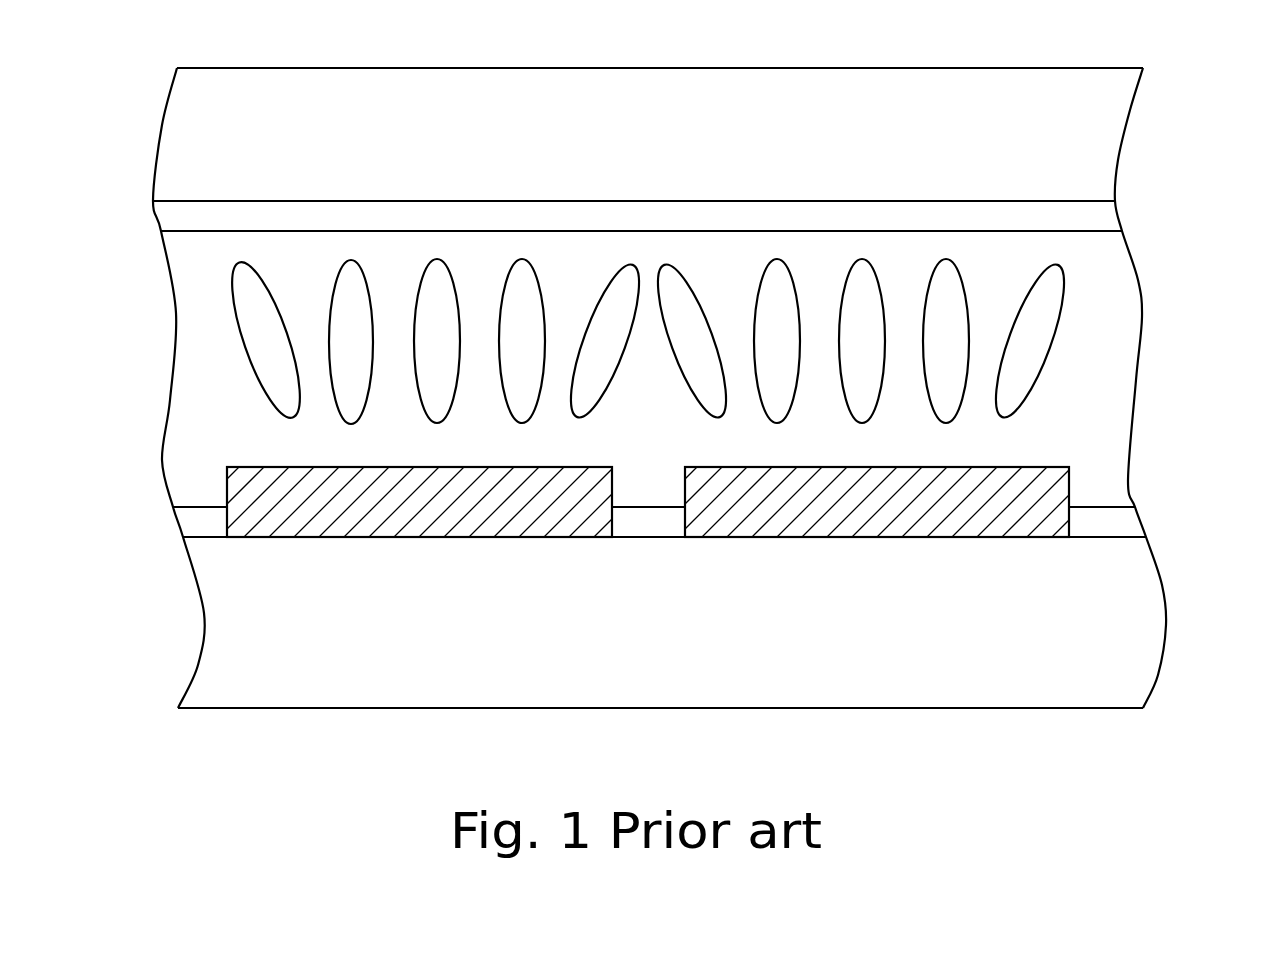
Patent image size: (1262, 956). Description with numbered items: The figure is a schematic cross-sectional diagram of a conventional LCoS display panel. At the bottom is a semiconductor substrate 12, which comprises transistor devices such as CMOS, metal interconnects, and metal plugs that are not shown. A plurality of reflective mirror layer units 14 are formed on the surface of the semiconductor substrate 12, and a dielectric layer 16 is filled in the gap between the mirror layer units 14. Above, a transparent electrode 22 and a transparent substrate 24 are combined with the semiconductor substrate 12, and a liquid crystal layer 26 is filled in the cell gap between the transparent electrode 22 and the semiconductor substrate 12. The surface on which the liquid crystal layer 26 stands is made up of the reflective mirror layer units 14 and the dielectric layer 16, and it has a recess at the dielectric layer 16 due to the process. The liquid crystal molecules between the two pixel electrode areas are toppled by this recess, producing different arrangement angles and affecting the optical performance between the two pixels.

The semiconductor substrate 12 is at (657, 657).
The reflective mirror layer units 14 is at (439, 517).
The dielectric layer 16 is at (1125, 527).
The transparent electrode 22 is at (1107, 214).
The transparent substrate 24 is at (660, 153).
The liquid crystal layer 26 is at (1107, 362).